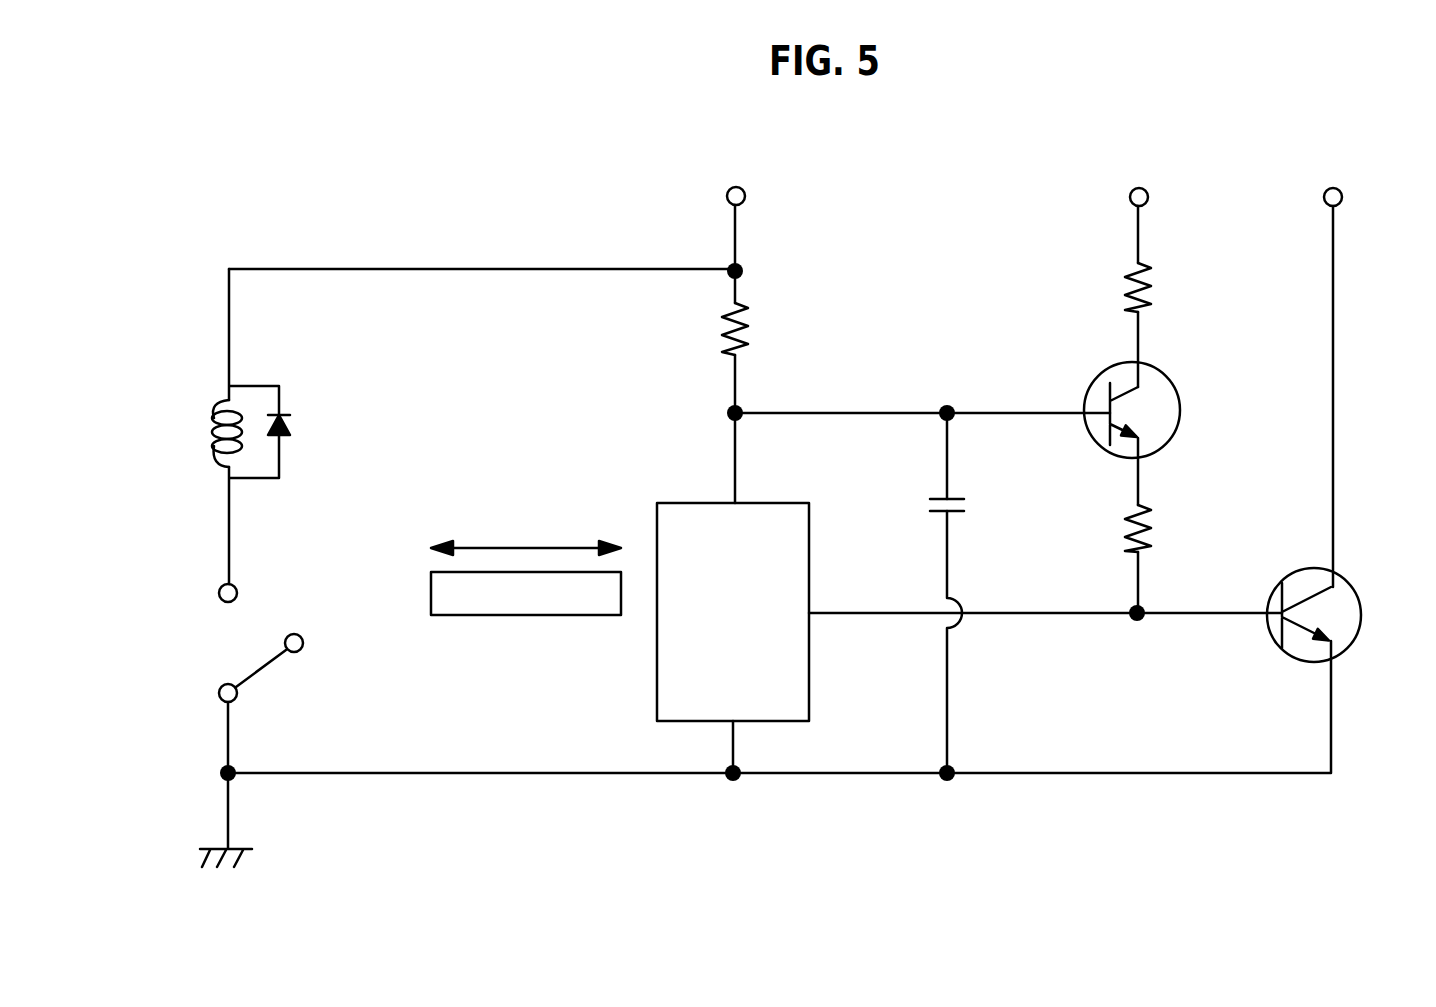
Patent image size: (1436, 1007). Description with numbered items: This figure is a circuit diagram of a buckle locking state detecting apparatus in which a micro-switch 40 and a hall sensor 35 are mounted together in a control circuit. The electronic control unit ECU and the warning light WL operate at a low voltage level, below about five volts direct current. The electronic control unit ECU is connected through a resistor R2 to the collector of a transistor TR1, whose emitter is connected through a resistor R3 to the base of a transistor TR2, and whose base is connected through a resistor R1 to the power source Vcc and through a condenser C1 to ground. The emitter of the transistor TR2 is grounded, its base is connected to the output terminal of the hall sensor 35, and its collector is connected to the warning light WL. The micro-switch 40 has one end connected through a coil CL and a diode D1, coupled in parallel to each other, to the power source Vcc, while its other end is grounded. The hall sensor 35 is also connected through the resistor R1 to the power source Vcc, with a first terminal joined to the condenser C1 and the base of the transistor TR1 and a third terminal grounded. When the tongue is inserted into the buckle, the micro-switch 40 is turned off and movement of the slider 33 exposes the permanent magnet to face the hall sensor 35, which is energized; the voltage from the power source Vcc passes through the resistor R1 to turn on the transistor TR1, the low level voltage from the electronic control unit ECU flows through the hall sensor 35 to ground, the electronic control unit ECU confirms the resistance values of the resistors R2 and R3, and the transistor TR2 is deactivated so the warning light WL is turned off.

The slider 33 is at (468, 597).
The hall sensor 35 is at (699, 721).
The micro-switch 40 is at (255, 665).
The coil CL is at (210, 408).
The diode D1 is at (288, 427).
The resistor R1 is at (754, 329).
The resistor R2 is at (1159, 287).
The resistor R3 is at (1159, 528).
The condenser C1 is at (969, 507).
The transistor TR1 is at (1140, 397).
The transistor TR2 is at (1342, 615).
The power source Vcc is at (765, 196).
The electronic control unit ECU is at (1169, 196).
The warning light WL is at (1358, 196).